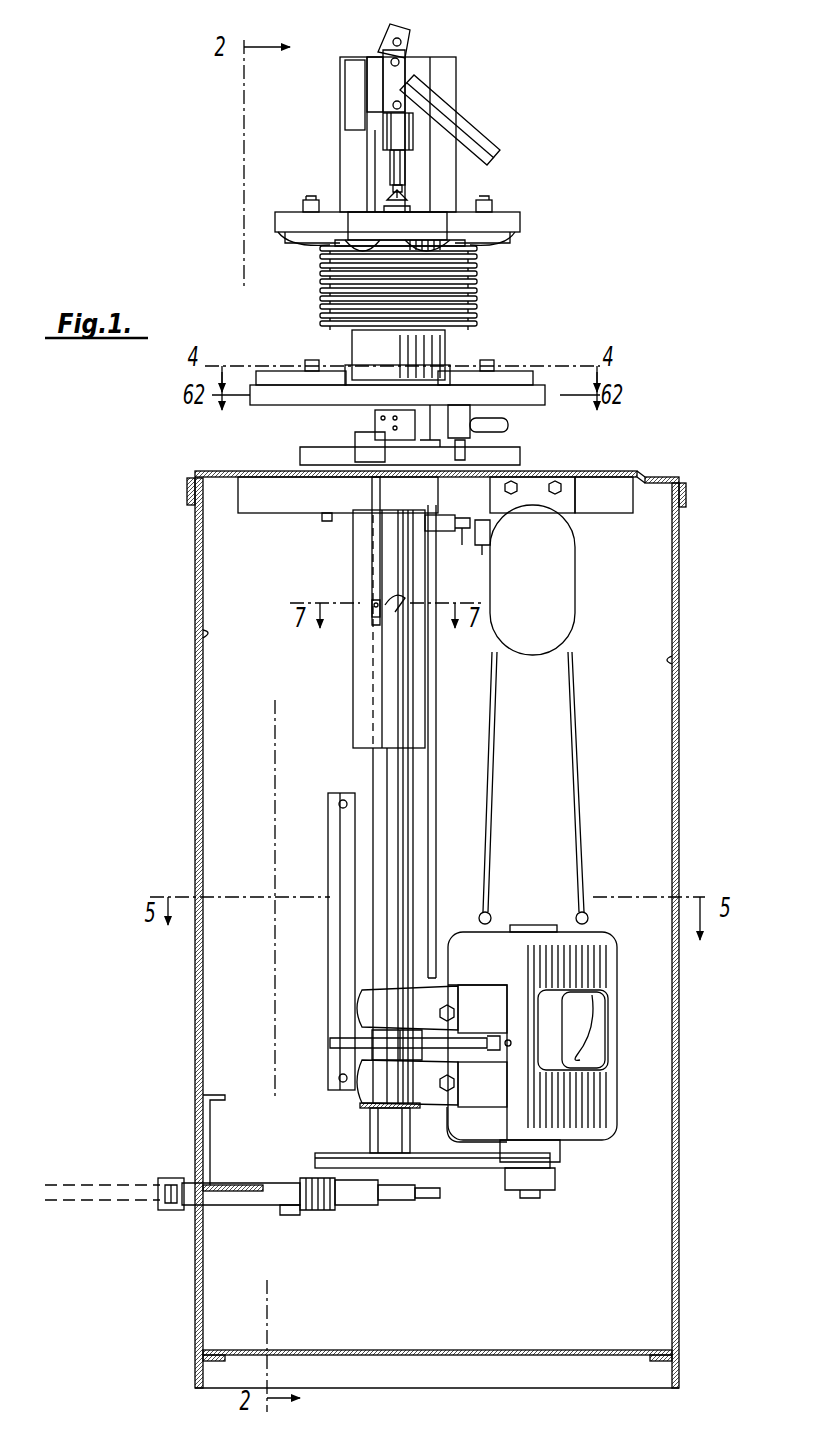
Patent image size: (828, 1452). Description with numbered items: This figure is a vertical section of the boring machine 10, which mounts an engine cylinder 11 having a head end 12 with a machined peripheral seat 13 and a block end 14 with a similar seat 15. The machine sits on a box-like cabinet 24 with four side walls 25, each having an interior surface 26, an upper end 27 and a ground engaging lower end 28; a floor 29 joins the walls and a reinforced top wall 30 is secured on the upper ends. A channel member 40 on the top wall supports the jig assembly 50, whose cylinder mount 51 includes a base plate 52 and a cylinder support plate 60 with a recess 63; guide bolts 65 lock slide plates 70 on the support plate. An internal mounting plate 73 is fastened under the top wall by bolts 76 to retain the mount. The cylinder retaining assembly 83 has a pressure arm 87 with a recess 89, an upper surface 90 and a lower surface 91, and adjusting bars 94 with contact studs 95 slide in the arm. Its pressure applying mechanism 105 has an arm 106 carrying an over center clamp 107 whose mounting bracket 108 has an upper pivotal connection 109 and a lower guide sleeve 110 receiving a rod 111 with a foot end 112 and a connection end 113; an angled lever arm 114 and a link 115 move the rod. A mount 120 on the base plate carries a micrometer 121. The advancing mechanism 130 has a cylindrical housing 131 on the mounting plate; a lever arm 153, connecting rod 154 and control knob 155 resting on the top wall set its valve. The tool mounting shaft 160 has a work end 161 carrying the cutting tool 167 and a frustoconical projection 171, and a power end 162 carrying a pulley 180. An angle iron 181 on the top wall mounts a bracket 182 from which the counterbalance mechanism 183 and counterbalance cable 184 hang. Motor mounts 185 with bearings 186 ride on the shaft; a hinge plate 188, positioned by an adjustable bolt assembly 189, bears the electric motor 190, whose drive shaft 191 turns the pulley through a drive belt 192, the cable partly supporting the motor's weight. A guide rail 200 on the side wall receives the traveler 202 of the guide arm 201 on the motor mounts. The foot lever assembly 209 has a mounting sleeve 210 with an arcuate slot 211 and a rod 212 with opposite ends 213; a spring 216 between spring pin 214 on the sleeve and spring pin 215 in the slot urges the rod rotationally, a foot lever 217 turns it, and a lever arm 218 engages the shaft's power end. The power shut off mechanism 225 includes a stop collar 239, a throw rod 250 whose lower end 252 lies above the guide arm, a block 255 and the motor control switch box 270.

The boring machine 10 is at (685, 476).
The internal combustion engine cylinder 11 is at (480, 290).
The head end 12 is at (335, 248).
The machined peripheral seat 13 is at (455, 250).
The block end 14 is at (350, 377).
The machined peripheral seat 15 is at (345, 382).
The cabinet 24 is at (193, 692).
The side walls 25 is at (196, 775).
The interior surface 26 is at (200, 625).
The upper end 27 is at (188, 497).
The lower end 28 is at (195, 1375).
The floor 29 is at (455, 1350).
The top wall 30 is at (597, 471).
The channel member 40 is at (466, 95).
The jig assembly 50 is at (540, 387).
The cylinder mount 51 is at (545, 397).
The base plate 52 is at (308, 454).
The cylinder support plate 60 is at (268, 392).
The recess 63 is at (302, 394).
The guide bolt 65 is at (482, 370).
The slide plate 70 is at (272, 387).
The internal mounting plate 73 is at (322, 500).
The bolts 76 is at (328, 518).
The cylinder retaining assembly 83 is at (522, 214).
The cylinder pressure arm 87 is at (288, 232).
The recess 89 is at (360, 228).
The upper surface 90 is at (300, 212).
The lower surface 91 is at (500, 248).
The adjusting bar 94 is at (292, 240).
The contact stud 95 is at (397, 224).
The pressure applying mechanism 105 is at (348, 44).
The arm 106 is at (356, 90).
The over center clamp 107 is at (440, 72).
The mounting bracket 108 is at (370, 64).
The upper pivotal connection 109 is at (398, 50).
The lower guide sleeve 110 is at (385, 138).
The rod 111 is at (396, 162).
The foot end 112 is at (410, 206).
The upper connection end 113 is at (432, 106).
The angled lever arm 114 is at (412, 80).
The link 115 is at (435, 82).
The mount 120 is at (500, 420).
The micrometer 121 is at (490, 434).
The advancing mechanism 130 is at (348, 684).
The cylindrical housing 131 is at (360, 709).
The lever arm 153 is at (400, 617).
The connecting rod 154 is at (372, 562).
The control knob 155 is at (338, 497).
The tool mounting shaft 160 is at (385, 767).
The work end 161 is at (372, 435).
The power end 162 is at (400, 1208).
The cutting tool 167 is at (375, 427).
The frustoconical projection 171 is at (395, 384).
The pulley 180 is at (365, 1150).
The angle iron 181 is at (615, 513).
The bracket 182 is at (575, 520).
The counterbalance mechanism 183 is at (560, 602).
The counterbalance cable 184 is at (576, 826).
The motor mounts 185 is at (365, 1009).
The bearing 186 is at (370, 1032).
The hinge plate 188 is at (508, 987).
The adjustable bolt assembly 189 is at (492, 1107).
The electric motor 190 is at (590, 1142).
The drive shaft 191 is at (530, 1198).
The drive belt 192 is at (460, 1170).
The guide rail 200 is at (335, 884).
The guide arm 201 is at (340, 1038).
The traveler 202 is at (330, 1049).
The foot lever assembly 209 is at (165, 1180).
The mounting sleeve 210 is at (265, 1212).
The slot 211 is at (356, 1208).
The rod 212 is at (222, 1185).
The opposite ends 213 is at (160, 1198).
The spring pin 214 is at (298, 1216).
The second spring pin 215 is at (336, 1208).
The spring 216 is at (322, 1212).
The foot lever 217 is at (105, 1192).
The lever arm 218 is at (395, 1200).
The power shut off mechanism 225 is at (458, 552).
The stop collar 239 is at (490, 460).
The throw rod 250 is at (436, 758).
The lower end 252 is at (436, 974).
The block 255 is at (425, 527).
The motor control switch box 270 is at (478, 550).